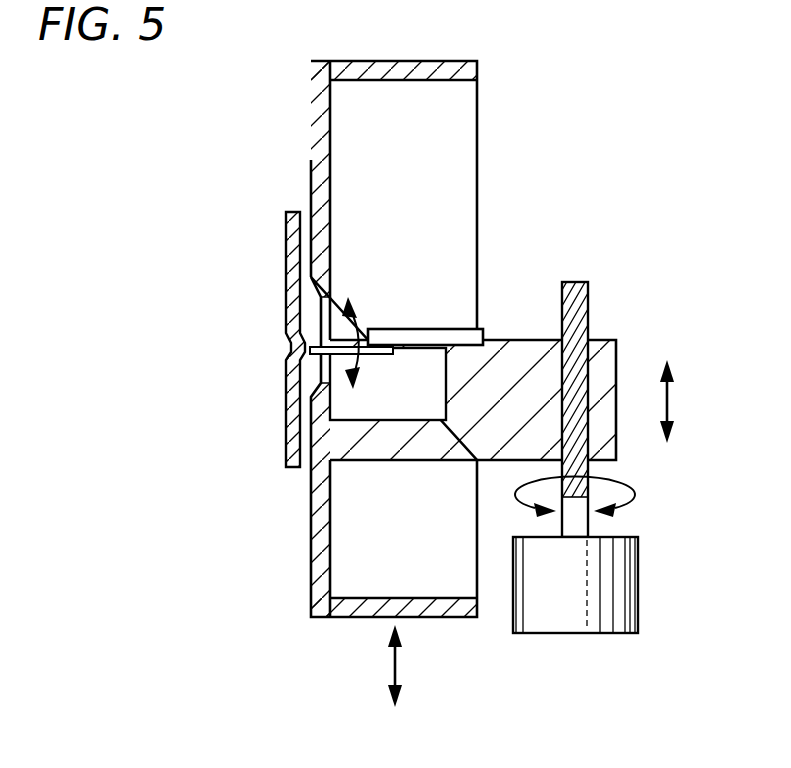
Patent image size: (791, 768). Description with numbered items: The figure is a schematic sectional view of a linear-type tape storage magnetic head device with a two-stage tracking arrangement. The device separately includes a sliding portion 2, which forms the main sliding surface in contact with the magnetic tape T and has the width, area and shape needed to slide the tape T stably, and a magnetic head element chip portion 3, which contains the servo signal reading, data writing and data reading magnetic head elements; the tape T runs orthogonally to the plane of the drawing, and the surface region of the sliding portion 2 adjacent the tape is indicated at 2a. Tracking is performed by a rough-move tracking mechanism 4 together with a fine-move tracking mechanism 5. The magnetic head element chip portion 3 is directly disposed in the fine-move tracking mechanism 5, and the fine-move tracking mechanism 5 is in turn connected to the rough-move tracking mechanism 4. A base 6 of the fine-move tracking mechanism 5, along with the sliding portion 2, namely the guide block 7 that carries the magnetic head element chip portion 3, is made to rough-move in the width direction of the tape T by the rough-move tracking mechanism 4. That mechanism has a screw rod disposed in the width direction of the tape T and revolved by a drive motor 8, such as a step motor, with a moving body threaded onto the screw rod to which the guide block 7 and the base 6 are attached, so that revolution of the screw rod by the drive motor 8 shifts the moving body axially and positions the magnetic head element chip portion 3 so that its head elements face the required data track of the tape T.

The sliding portion 2 is at (320, 100).
The housing side wall opening portion 2a is at (312, 166).
The magnetic head element chip portion 3 is at (292, 337).
The rough-move tracking mechanism 4 is at (718, 473).
The fine-move tracking mechanism 5 is at (353, 333).
The base 6 is at (445, 340).
The guide block 7 is at (345, 612).
The drive motor 8 is at (620, 578).
The magnetic tape T is at (292, 450).